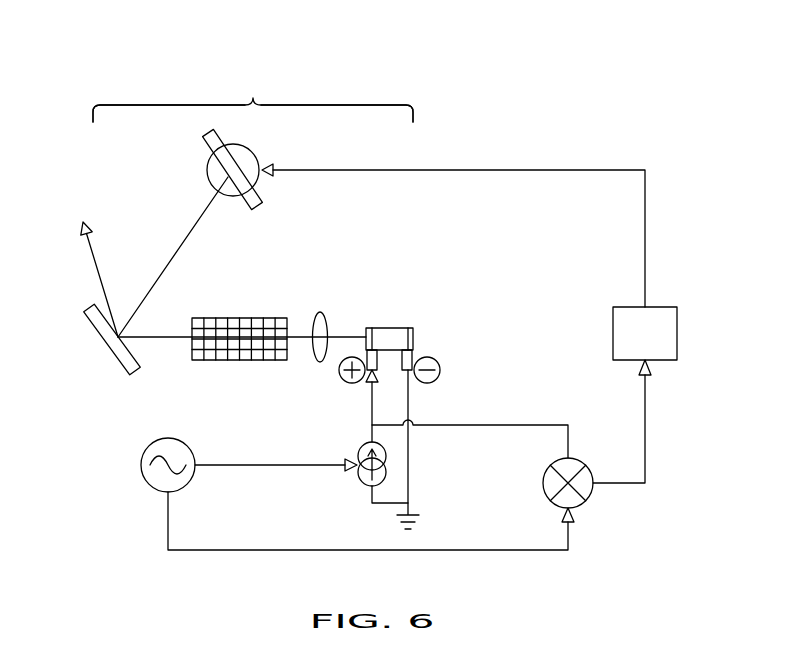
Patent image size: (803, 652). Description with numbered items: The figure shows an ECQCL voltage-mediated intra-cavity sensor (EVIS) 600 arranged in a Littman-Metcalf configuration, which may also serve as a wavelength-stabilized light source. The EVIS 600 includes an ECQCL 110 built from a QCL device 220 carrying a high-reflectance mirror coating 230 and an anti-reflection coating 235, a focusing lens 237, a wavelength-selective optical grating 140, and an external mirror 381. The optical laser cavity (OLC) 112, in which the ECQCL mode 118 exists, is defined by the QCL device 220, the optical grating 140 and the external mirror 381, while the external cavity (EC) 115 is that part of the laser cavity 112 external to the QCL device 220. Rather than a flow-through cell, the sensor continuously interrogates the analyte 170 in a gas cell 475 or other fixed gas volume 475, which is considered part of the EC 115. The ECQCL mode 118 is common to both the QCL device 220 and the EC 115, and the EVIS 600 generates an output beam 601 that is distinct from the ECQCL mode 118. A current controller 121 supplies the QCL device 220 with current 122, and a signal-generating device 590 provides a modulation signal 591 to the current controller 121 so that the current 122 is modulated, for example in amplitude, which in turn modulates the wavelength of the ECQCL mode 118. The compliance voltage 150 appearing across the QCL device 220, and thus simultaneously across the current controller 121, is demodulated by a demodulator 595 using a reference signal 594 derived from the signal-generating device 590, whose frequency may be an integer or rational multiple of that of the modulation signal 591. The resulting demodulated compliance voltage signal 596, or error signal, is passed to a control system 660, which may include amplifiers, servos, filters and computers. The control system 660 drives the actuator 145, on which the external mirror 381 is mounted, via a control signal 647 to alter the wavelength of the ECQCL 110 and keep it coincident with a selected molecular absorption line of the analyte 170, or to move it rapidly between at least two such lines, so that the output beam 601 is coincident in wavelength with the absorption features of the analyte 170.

The ECQCL voltage-mediated intra-cavity sensor (EVIS) 600 is at (641, 119).
The optical laser cavity (OLC) 112 is at (140, 102).
The ECQCL 110 is at (253, 98).
The external cavity (EC) 115 is at (373, 102).
The actuator 145 is at (207, 166).
The external mirror 381 is at (246, 148).
The ECQCL mode 118 is at (196, 223).
The output beam 601 is at (95, 262).
The optical grating 140 is at (118, 362).
The gas cell 475 is at (210, 360).
The analyte 170 is at (255, 343).
The focusing lens 237 is at (317, 313).
The QCL device 220 is at (377, 328).
The high-reflectance mirror coating 230 is at (413, 330).
The anti-reflection coating 235 is at (366, 346).
The current 122 is at (370, 400).
The current controller 121 is at (356, 480).
The compliance voltage 150 is at (502, 427).
The signal-generating device 590 is at (153, 438).
The modulation signal 591 is at (258, 462).
The reference signal 594 is at (248, 548).
The demodulator 595 is at (543, 495).
The demodulated compliance voltage signal 596 is at (647, 437).
The control system 660 is at (630, 346).
The control signal 647 is at (558, 168).